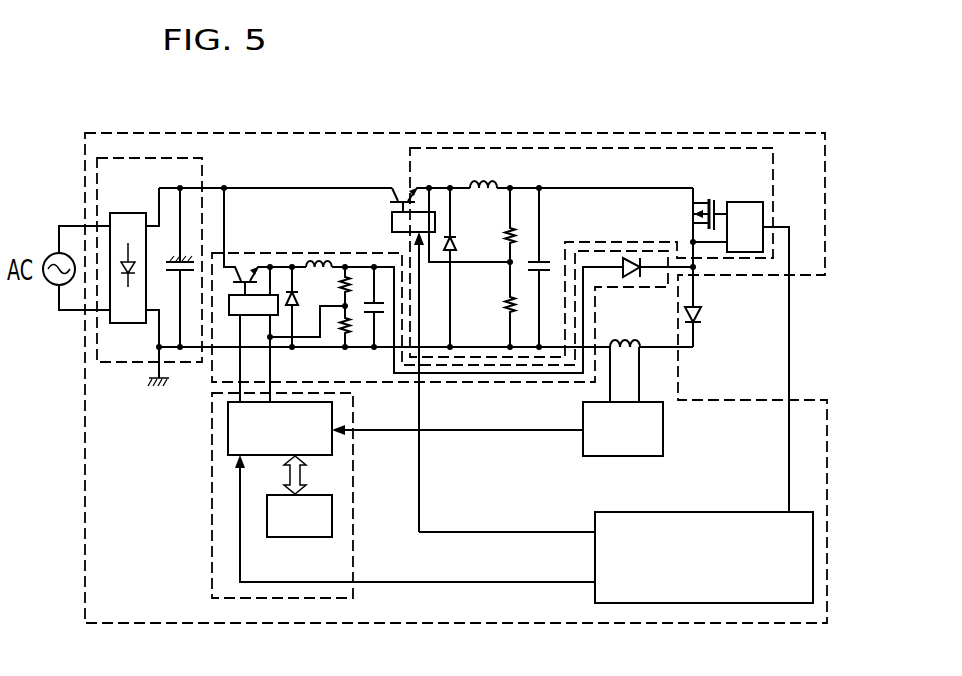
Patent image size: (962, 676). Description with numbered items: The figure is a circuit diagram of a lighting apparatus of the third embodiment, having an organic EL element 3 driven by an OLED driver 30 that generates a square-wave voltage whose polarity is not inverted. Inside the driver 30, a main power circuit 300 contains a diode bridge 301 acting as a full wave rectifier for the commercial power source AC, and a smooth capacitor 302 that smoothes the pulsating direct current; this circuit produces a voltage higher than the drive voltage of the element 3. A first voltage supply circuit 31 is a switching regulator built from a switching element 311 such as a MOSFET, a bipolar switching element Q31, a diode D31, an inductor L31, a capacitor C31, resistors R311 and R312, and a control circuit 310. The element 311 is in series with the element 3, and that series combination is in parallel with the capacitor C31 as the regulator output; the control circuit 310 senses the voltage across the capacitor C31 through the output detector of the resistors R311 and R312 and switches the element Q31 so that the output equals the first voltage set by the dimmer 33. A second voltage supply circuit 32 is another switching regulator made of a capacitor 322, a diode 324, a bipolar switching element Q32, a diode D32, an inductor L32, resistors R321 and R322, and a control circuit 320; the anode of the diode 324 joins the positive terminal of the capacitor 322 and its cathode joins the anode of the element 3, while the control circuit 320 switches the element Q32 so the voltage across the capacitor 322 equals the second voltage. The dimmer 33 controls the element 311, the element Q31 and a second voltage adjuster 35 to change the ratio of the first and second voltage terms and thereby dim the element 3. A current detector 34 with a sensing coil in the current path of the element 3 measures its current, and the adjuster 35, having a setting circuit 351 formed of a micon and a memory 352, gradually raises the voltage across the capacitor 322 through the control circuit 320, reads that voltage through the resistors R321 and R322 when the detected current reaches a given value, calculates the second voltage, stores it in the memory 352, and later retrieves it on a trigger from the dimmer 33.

The OLED driver 30 is at (823, 133).
The main power circuit 300 is at (149, 157).
The diode bridge 301 is at (127, 217).
The smooth capacitor 302 is at (185, 262).
The first voltage supply circuit 31 is at (470, 148).
The control circuit 310 is at (397, 217).
The switching element 311 is at (712, 199).
The second voltage supply circuit 32 is at (290, 252).
The control circuit 320 is at (233, 313).
The capacitor 322 is at (383, 316).
The diode 324 is at (632, 258).
The dimmer 33 is at (714, 525).
The current detector 34 is at (625, 455).
The second voltage adjuster 35 is at (210, 532).
The setting circuit 351 is at (235, 442).
The memory 352 is at (287, 533).
The organic EL element 3 is at (707, 318).
The switching element Q31 is at (405, 196).
The switching element Q32 is at (243, 268).
The diode D31 is at (456, 252).
The diode D32 is at (290, 295).
The inductor L31 is at (497, 181).
The inductor L32 is at (318, 253).
The resistor R311 is at (508, 236).
The resistor R312 is at (505, 308).
The resistor R321 is at (348, 274).
The resistor R322 is at (342, 338).
The capacitor C31 is at (543, 263).